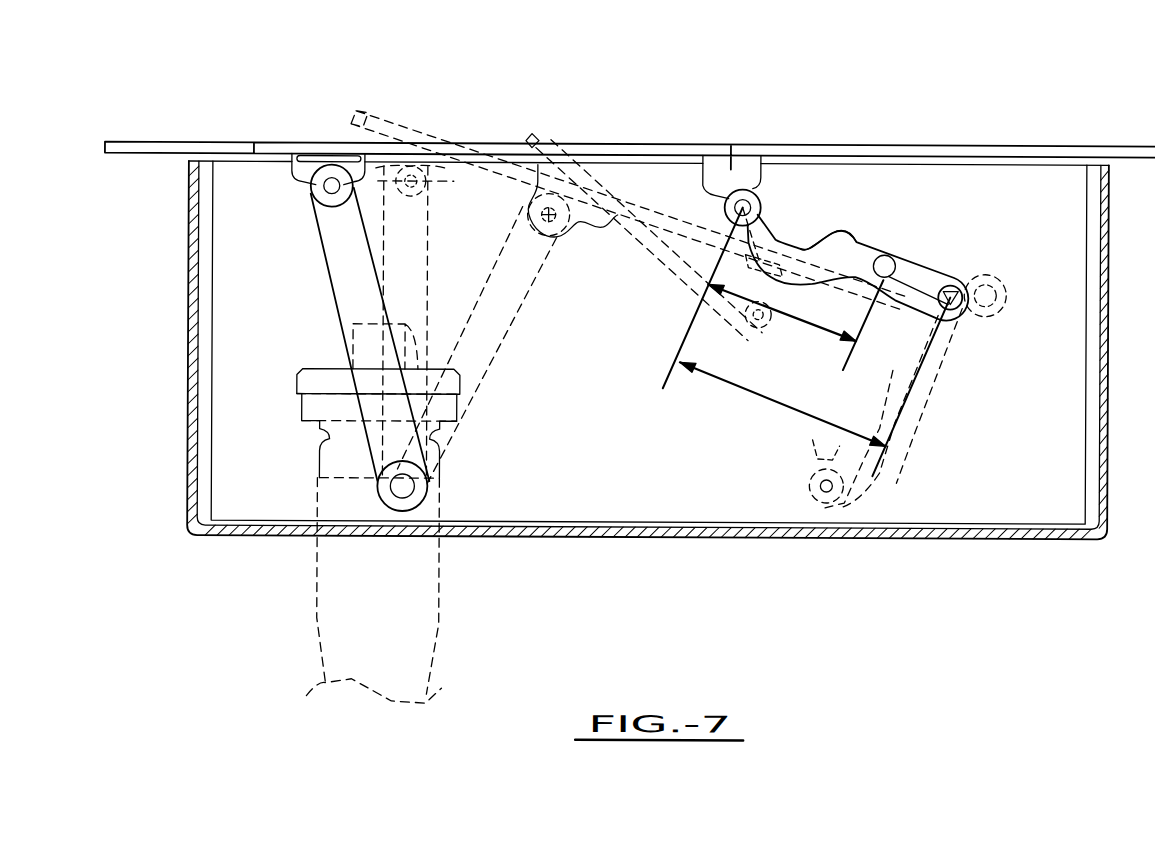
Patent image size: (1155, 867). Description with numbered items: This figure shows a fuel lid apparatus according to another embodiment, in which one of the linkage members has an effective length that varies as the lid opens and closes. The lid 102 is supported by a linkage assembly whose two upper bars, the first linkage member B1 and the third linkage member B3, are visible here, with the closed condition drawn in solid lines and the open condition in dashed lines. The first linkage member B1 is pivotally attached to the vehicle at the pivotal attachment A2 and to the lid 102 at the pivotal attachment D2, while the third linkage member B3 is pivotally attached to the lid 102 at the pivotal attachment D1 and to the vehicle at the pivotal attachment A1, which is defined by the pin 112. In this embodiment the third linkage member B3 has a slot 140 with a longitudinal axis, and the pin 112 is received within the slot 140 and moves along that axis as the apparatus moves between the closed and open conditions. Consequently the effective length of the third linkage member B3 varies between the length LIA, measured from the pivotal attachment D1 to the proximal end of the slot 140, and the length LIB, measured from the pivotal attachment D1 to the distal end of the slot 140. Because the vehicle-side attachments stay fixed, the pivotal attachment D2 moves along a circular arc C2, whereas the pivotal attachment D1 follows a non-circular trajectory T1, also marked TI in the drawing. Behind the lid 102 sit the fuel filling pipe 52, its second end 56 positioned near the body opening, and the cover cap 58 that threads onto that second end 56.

The lid 102 is at (588, 142).
The slot 140 is at (906, 267).
The pivot pin 112 is at (951, 312).
The cover cap 58 is at (320, 362).
The second end of fuel filling pipe 56 is at (317, 475).
The fuel filling pipe 52 is at (352, 647).
The pivotal attachment between first and second linkage members and lid D2 is at (331, 185).
The pivotal attachment between third and fourth linkage members and lid D1 is at (742, 205).
The pivotal attachment between third and fourth linkage members and vehicle A1 is at (950, 294).
The pivotal attachment between first and second linkage members and vehicle A2 is at (405, 485).
The arc C2 is at (474, 177).
The first linkage member B1 is at (331, 243).
The third linkage member B3 is at (804, 258).
The non-circular trajectory T1 is at (777, 245).
The effective length L1A LIA is at (820, 321).
The effective length L1B LIB is at (760, 393).
The non-circular trajectory TI is at (793, 398).